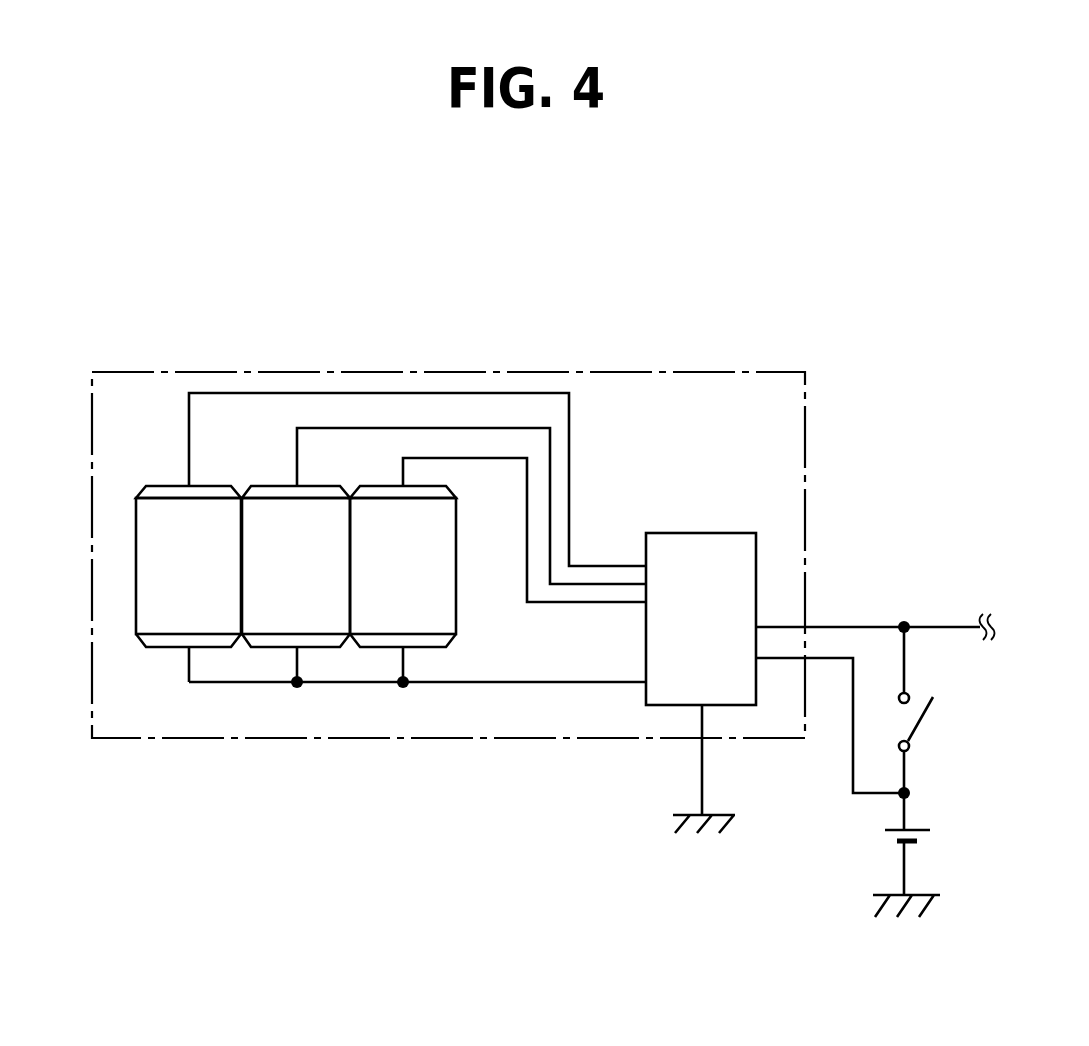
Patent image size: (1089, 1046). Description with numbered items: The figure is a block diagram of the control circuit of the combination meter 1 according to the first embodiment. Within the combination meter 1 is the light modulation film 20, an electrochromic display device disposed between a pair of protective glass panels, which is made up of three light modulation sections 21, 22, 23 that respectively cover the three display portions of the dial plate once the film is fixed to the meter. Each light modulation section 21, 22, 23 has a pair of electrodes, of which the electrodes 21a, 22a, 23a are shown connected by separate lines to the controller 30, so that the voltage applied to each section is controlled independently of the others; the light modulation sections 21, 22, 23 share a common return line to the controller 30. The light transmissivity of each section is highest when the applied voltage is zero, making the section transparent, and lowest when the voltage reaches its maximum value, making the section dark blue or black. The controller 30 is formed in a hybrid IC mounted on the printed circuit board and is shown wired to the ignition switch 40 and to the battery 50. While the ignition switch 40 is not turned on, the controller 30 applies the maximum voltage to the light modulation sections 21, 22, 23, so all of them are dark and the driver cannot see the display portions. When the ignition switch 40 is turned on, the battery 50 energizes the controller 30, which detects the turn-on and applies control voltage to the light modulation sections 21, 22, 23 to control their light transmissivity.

The combination meter 1 is at (118, 373).
The light modulation film 20 is at (368, 276).
The light modulation section 21 is at (264, 468).
The light modulation section 22 is at (379, 467).
The light modulation section 23 is at (171, 468).
The electrode 21a is at (316, 495).
The electrode 22a is at (425, 495).
The electrode 23a is at (213, 490).
The controller 30 is at (700, 533).
The ignition switch 40 is at (922, 720).
The battery 50 is at (923, 830).